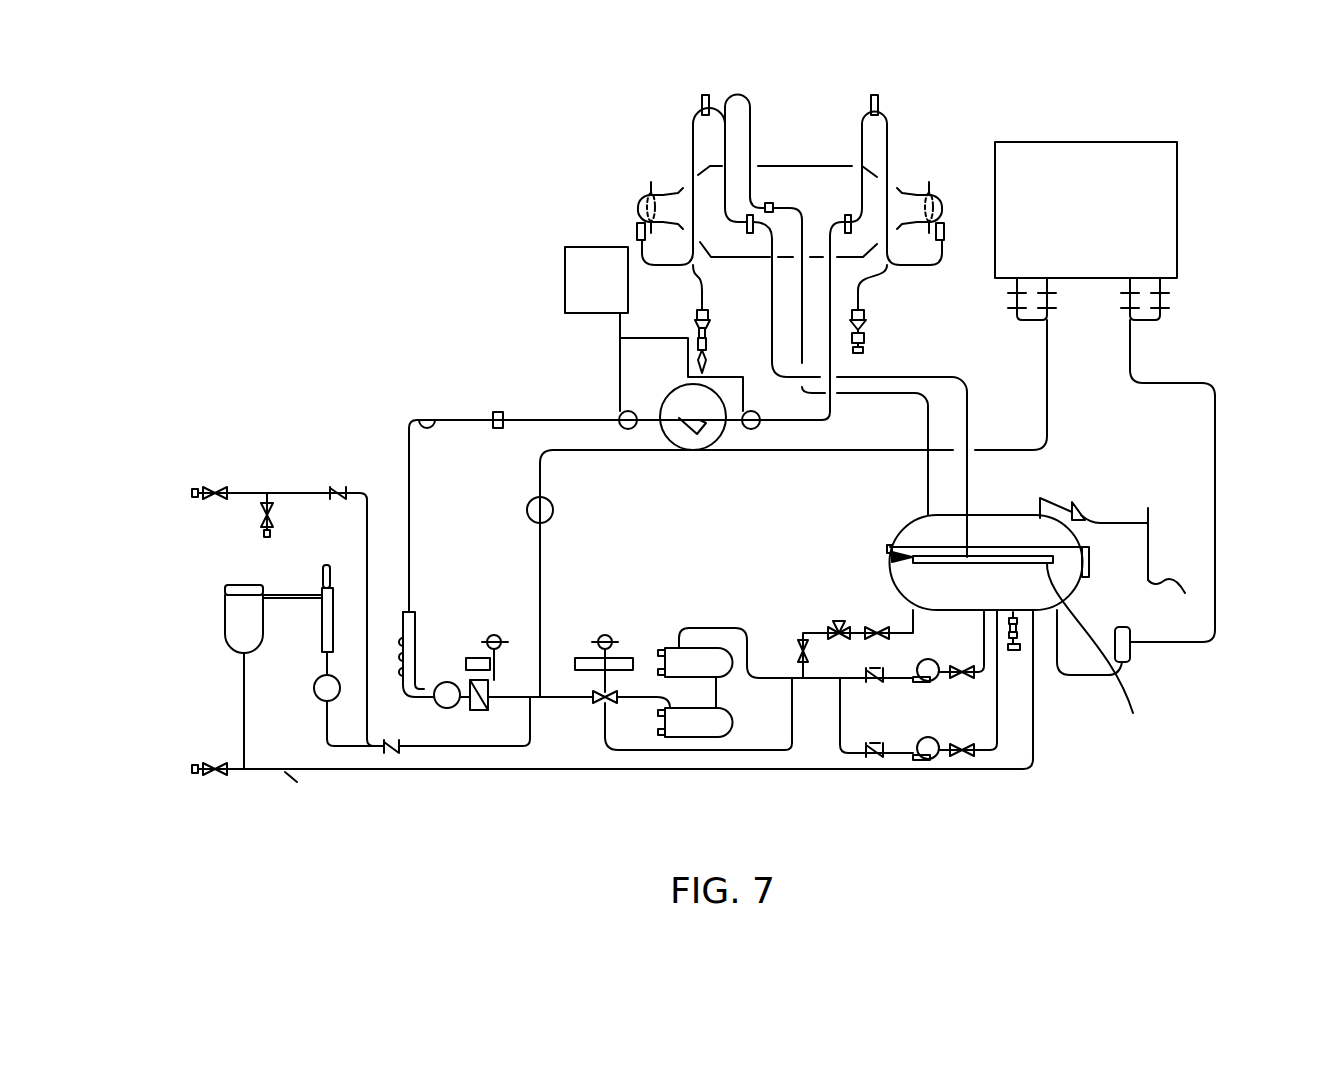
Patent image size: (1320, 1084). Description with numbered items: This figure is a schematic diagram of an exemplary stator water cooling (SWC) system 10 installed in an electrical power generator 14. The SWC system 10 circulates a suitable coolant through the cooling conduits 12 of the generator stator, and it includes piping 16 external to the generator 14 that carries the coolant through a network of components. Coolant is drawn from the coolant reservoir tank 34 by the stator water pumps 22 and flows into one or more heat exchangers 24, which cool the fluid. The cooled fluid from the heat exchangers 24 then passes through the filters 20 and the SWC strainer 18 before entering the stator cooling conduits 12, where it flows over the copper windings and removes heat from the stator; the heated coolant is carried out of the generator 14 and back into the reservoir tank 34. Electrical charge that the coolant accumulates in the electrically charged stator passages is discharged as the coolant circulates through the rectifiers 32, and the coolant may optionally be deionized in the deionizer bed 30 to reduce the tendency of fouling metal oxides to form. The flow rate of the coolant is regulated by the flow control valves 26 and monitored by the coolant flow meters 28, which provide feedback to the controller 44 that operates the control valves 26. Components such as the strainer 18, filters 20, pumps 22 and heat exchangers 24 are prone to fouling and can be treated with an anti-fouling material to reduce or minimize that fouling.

The SWC system 10 is at (448, 197).
The cooling conduits 12 is at (727, 185).
The electrical power generator 14 is at (822, 205).
The piping 16 is at (568, 398).
The SWC strainer 18 is at (670, 393).
The filters 20 is at (553, 514).
The stator water pumps 22 is at (932, 682).
The heat exchangers 24 is at (726, 676).
The flow control valves 26 is at (472, 657).
The coolant flow meters 28 is at (322, 578).
The deionizer bed 30 is at (227, 632).
The rectifiers 32 is at (1177, 205).
The coolant reservoir tank 34 is at (990, 537).
The controller 44 is at (563, 280).